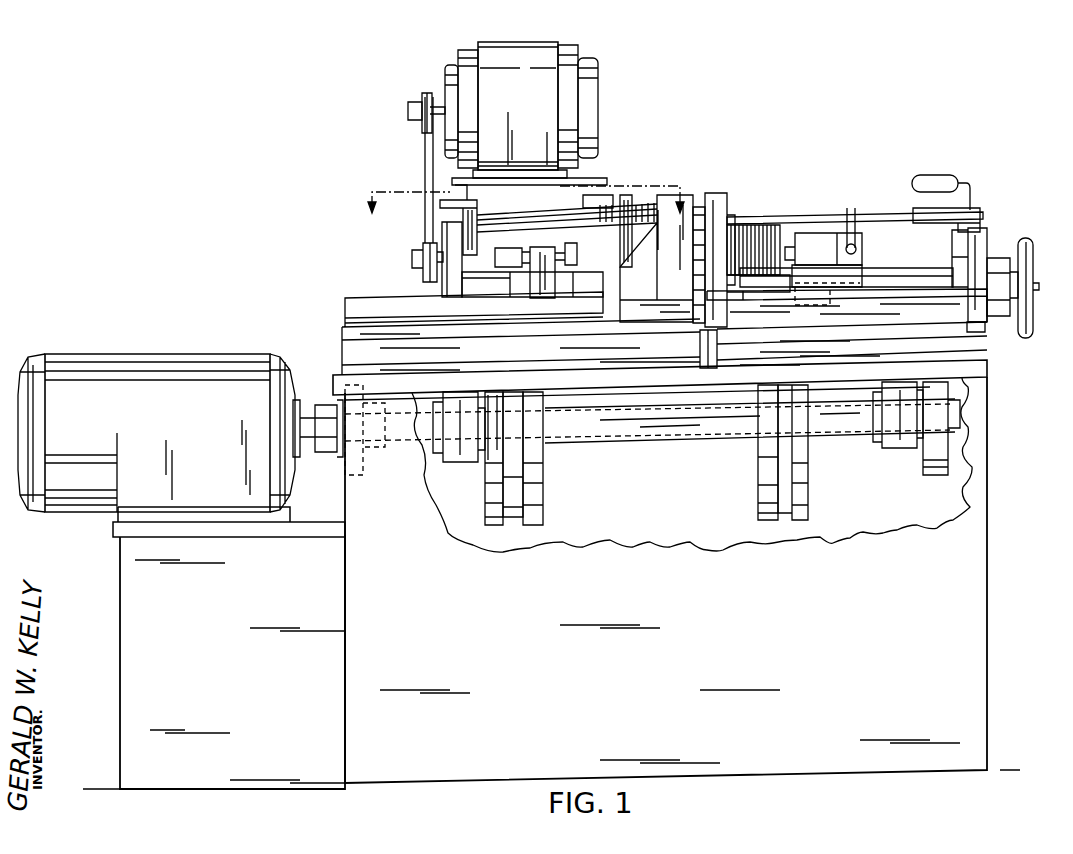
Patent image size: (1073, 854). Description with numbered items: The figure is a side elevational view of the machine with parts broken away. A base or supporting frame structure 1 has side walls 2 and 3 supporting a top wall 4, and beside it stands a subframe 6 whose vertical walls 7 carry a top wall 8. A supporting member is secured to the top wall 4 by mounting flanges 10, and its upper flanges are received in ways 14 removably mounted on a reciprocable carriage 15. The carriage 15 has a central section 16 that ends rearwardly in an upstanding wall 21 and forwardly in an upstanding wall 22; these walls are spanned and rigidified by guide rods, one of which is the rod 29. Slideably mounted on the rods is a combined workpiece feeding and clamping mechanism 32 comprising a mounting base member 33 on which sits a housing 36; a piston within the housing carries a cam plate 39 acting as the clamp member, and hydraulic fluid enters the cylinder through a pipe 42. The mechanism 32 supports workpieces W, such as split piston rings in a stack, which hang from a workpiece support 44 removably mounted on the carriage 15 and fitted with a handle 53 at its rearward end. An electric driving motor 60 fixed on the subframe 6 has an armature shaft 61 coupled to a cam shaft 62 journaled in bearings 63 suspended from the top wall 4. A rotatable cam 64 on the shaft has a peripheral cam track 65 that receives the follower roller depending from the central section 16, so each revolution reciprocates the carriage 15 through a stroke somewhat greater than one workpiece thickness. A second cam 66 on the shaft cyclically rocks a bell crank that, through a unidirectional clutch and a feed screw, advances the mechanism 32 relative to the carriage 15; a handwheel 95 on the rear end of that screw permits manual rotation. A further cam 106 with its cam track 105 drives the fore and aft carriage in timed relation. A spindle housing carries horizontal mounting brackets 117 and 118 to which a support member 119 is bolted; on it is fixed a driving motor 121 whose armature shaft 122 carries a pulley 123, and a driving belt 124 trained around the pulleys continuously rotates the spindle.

The base or supporting frame structure 1 is at (988, 606).
The side wall 2 is at (669, 598).
The side wall 3 is at (877, 509).
The top wall 4 is at (702, 385).
The subframe 6 is at (119, 580).
The vertical walls 7 is at (223, 603).
The top wall 8 is at (328, 516).
The mounting flanges 10 is at (968, 368).
The ways 14 is at (968, 346).
The reciprocable carriage 15 is at (992, 325).
The central section 16 is at (933, 316).
The upstanding wall 21 is at (990, 250).
The upstanding wall 22 is at (718, 194).
The reinforcing and guide rod 29 is at (946, 262).
The combined workpiece feeding and clamping mechanism 32 is at (864, 252).
The mounting base member 33 is at (862, 272).
The housing 36 is at (848, 218).
The cam plate 39 is at (800, 224).
The pipe 42 is at (858, 210).
The workpiece support 44 is at (826, 214).
The handle 53 is at (935, 176).
The electric driving motor 60 is at (160, 354).
The armature shaft 61 is at (318, 404).
The cam shaft 62 is at (632, 440).
The bearings 63 is at (462, 456).
The rotatable cam 64 is at (808, 482).
The cam track 65 is at (792, 458).
The cam 66 is at (940, 474).
The handwheel 95 is at (1032, 250).
The cam track 105 is at (540, 458).
The cam 106 is at (543, 480).
The horizontal mounting bracket 117 is at (472, 208).
The horizontal mounting bracket 118 is at (584, 208).
The support member 119 is at (604, 178).
The driving motor 121 is at (598, 130).
The armature shaft 122 is at (408, 120).
The pulley 123 is at (422, 96).
The driving belt 124 is at (425, 168).
The workpieces W is at (756, 224).